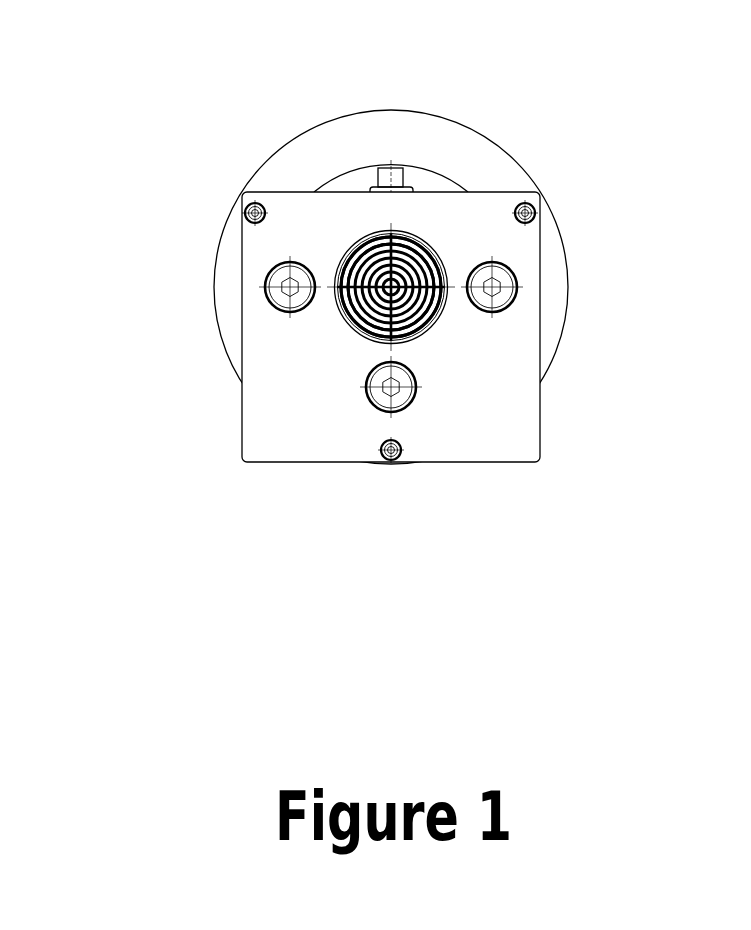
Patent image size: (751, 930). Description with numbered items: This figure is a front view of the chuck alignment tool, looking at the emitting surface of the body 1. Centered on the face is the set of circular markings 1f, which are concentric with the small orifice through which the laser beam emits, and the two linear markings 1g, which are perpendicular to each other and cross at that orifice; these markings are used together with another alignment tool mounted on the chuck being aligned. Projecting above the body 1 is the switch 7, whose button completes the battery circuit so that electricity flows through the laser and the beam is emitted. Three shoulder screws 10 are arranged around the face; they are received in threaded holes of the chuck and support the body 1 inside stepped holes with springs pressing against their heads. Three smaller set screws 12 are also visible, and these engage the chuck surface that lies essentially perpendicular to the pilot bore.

The body 1 is at (352, 230).
The switch 7 is at (407, 155).
The shoulder screws 10 is at (273, 276).
The set screws 12 is at (242, 197).
The circular markings 1f is at (438, 318).
The linear markings 1g is at (336, 296).